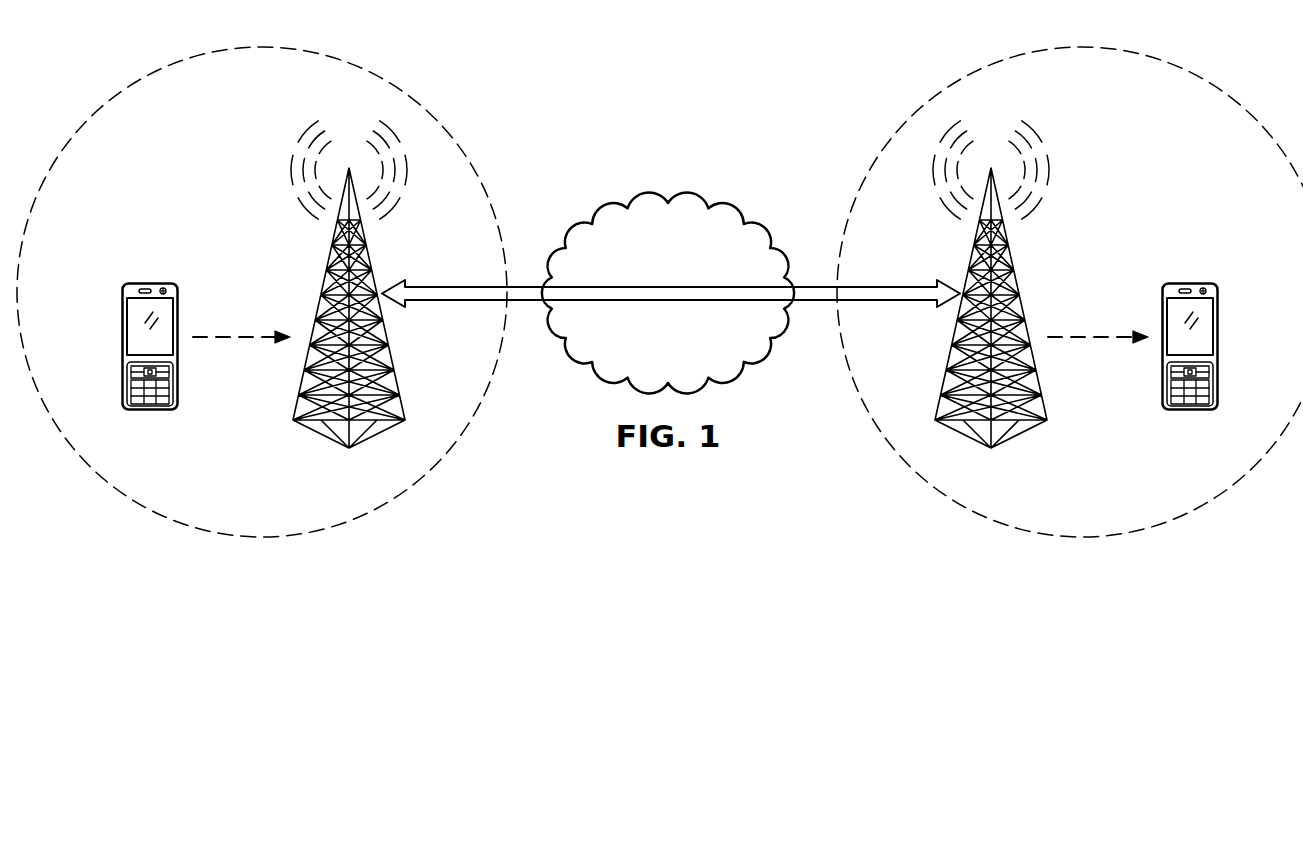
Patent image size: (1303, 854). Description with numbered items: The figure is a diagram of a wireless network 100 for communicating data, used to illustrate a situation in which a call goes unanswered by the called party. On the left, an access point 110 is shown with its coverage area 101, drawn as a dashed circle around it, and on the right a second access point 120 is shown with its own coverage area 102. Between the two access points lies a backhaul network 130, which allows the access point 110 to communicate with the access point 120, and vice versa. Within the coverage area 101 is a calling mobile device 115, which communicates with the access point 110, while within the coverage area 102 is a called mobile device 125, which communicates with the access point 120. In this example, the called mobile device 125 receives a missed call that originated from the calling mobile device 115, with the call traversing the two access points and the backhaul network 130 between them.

The network 100 is at (527, 85).
The coverage area 101 is at (218, 114).
The coverage area 102 is at (1058, 114).
The access point 110 is at (328, 278).
The calling mobile device 115 is at (122, 338).
The access point 120 is at (1012, 278).
The called mobile device 125 is at (1219, 338).
The backhaul network 130 is at (688, 348).